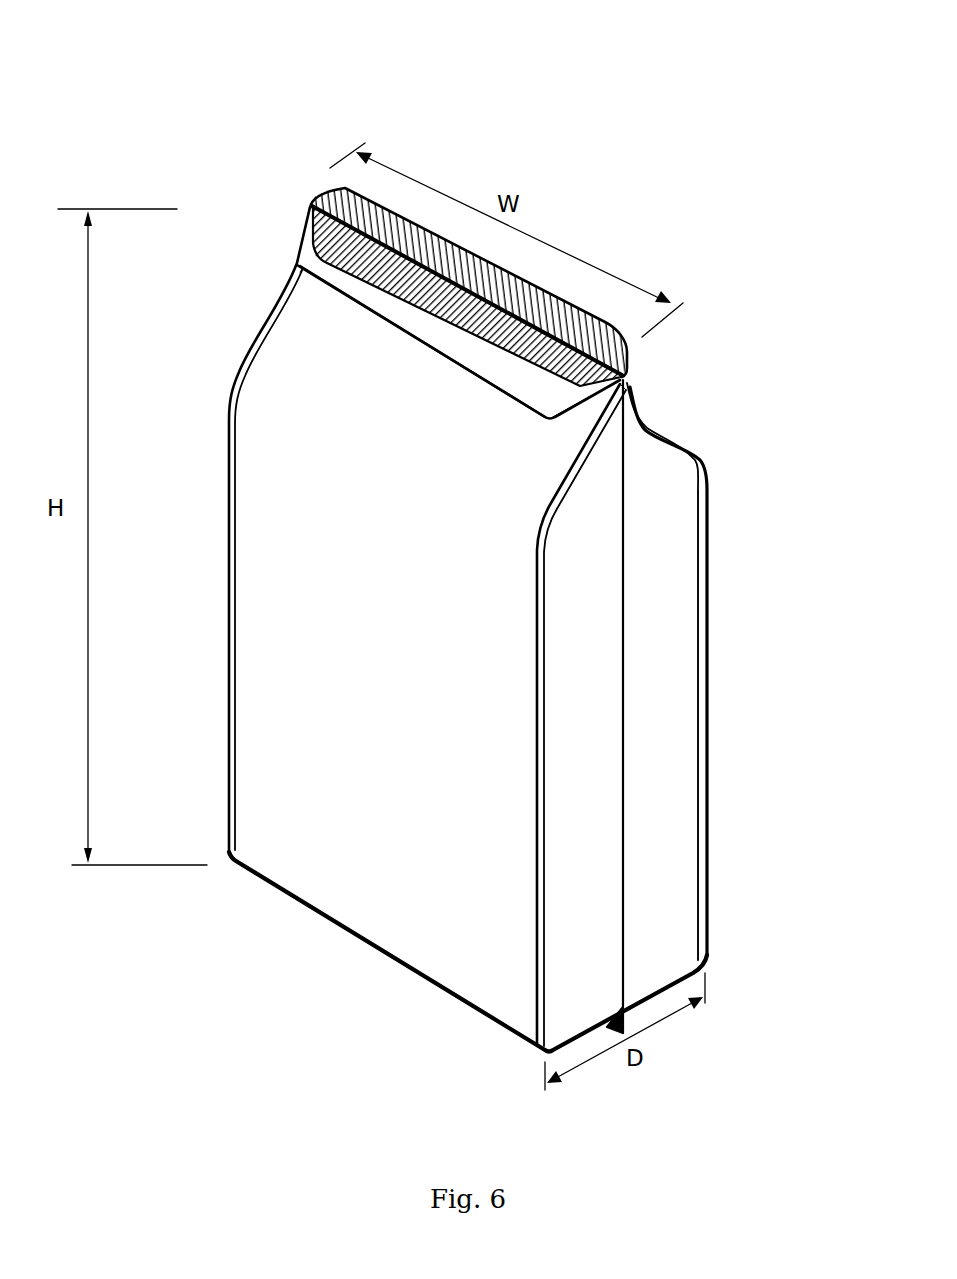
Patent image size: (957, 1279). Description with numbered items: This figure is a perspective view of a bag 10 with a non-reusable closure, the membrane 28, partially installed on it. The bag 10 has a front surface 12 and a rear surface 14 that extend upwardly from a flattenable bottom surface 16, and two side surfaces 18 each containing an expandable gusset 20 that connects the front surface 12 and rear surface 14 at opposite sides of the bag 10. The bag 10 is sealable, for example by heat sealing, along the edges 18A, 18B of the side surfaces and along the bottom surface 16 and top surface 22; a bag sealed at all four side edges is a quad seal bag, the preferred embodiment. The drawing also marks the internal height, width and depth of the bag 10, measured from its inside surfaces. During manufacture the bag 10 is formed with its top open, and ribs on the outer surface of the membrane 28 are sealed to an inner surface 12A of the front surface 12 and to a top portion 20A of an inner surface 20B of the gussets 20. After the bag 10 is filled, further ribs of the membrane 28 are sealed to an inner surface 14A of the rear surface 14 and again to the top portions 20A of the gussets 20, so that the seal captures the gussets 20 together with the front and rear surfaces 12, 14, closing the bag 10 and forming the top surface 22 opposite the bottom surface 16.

The bag 10 is at (615, 165).
The front surface 12 is at (265, 558).
The inner surface of front surface 12A is at (383, 326).
The rear surface 14 is at (718, 567).
The inner surface of rear surface 14A is at (603, 302).
The flattenable bottom surface 16 is at (686, 983).
The side surfaces 18 is at (685, 685).
The side surface edge 18A is at (228, 853).
The side surface edge 18B is at (702, 768).
The expandable gusset 20 is at (625, 843).
The top portion of gusset inner surface 20A is at (308, 228).
The inner surface of gusset 20B is at (307, 260).
The top surface 22 is at (553, 428).
The membrane 28 is at (630, 354).